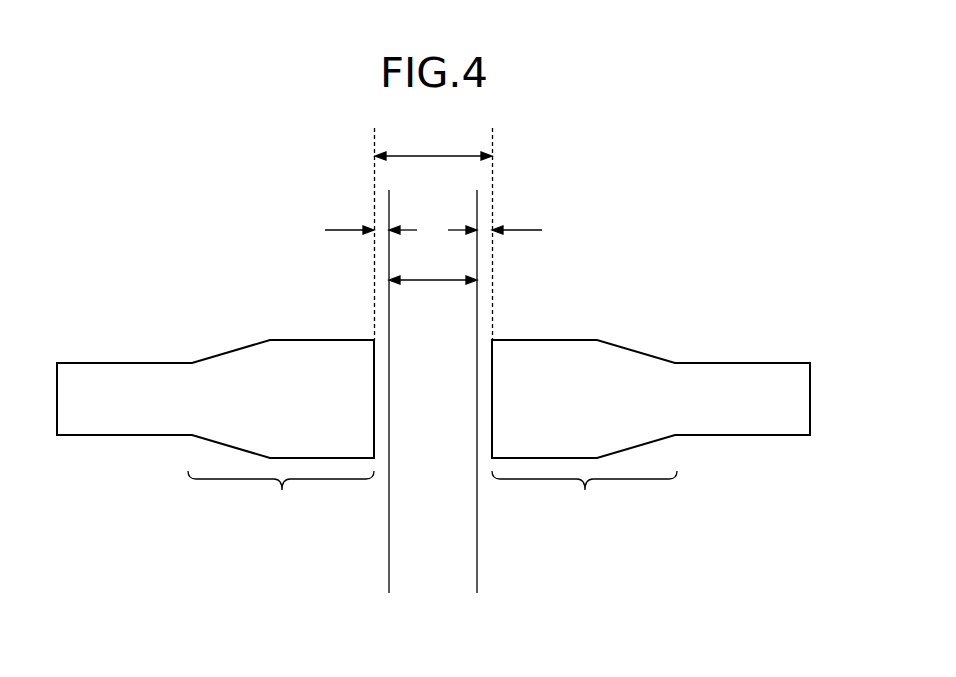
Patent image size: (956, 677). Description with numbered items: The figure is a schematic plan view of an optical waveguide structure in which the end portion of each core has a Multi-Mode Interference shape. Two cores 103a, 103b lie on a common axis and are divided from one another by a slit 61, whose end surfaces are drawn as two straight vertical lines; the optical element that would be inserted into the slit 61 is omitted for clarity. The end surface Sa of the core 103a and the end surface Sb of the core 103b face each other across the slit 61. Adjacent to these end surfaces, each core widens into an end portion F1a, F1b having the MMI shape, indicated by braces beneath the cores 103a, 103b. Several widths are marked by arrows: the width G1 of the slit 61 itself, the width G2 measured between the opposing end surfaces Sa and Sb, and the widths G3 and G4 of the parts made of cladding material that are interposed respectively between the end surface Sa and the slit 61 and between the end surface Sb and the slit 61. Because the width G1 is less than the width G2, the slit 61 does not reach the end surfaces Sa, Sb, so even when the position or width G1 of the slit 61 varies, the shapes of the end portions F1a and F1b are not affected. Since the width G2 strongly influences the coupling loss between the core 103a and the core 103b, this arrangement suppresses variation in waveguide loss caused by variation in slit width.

The slit 61 is at (389, 500).
The core 103a is at (125, 362).
The core 103b is at (745, 362).
The end surface Sa is at (384, 373).
The end surface Sb is at (482, 422).
The end portion F1a is at (281, 496).
The end portion F1b is at (584, 496).
The width of the slit G1 is at (433, 267).
The width between the end surfaces G2 is at (433, 142).
The width G3 is at (371, 217).
The width G4 is at (495, 217).